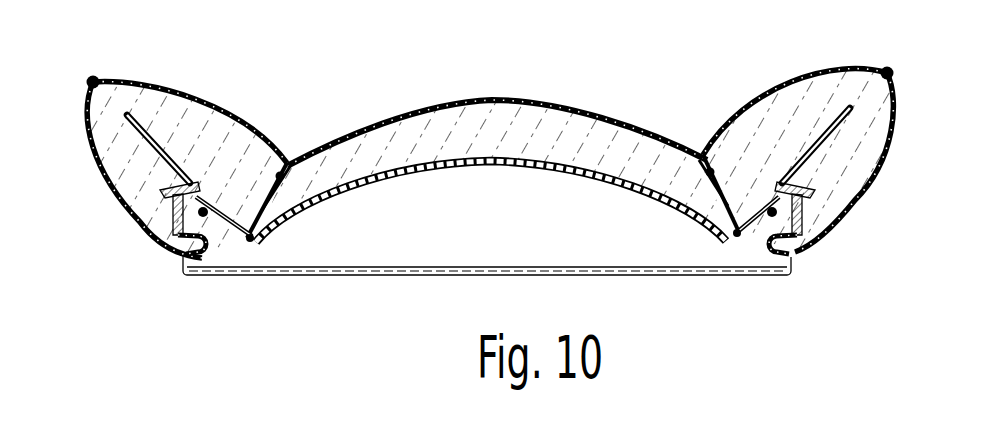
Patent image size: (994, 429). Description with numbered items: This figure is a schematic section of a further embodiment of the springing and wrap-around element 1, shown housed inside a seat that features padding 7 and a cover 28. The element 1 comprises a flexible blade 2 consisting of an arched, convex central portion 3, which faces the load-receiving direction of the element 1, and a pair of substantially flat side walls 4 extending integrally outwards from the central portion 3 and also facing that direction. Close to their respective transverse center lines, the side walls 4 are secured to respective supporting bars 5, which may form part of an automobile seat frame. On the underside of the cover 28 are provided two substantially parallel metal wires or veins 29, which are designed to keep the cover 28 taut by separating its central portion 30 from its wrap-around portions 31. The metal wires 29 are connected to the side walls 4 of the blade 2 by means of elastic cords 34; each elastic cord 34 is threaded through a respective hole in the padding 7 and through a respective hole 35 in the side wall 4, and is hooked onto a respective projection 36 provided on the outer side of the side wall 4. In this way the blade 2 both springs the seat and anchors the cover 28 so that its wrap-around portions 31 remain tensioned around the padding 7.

The springing and wrap-around element 1 is at (491, 138).
The flexible blade 2 is at (491, 138).
The central portion 3 is at (552, 168).
The side walls 4 is at (153, 146).
The supporting bars 5 is at (173, 250).
The padding 7 is at (572, 130).
The cover 28 is at (235, 110).
The metal wires 29 is at (305, 158).
The central portion 30 is at (523, 97).
The wrap-around portions 31 is at (490, 133).
The elastic cords 34 is at (273, 197).
The holes 35 is at (240, 256).
The projections 36 is at (206, 257).